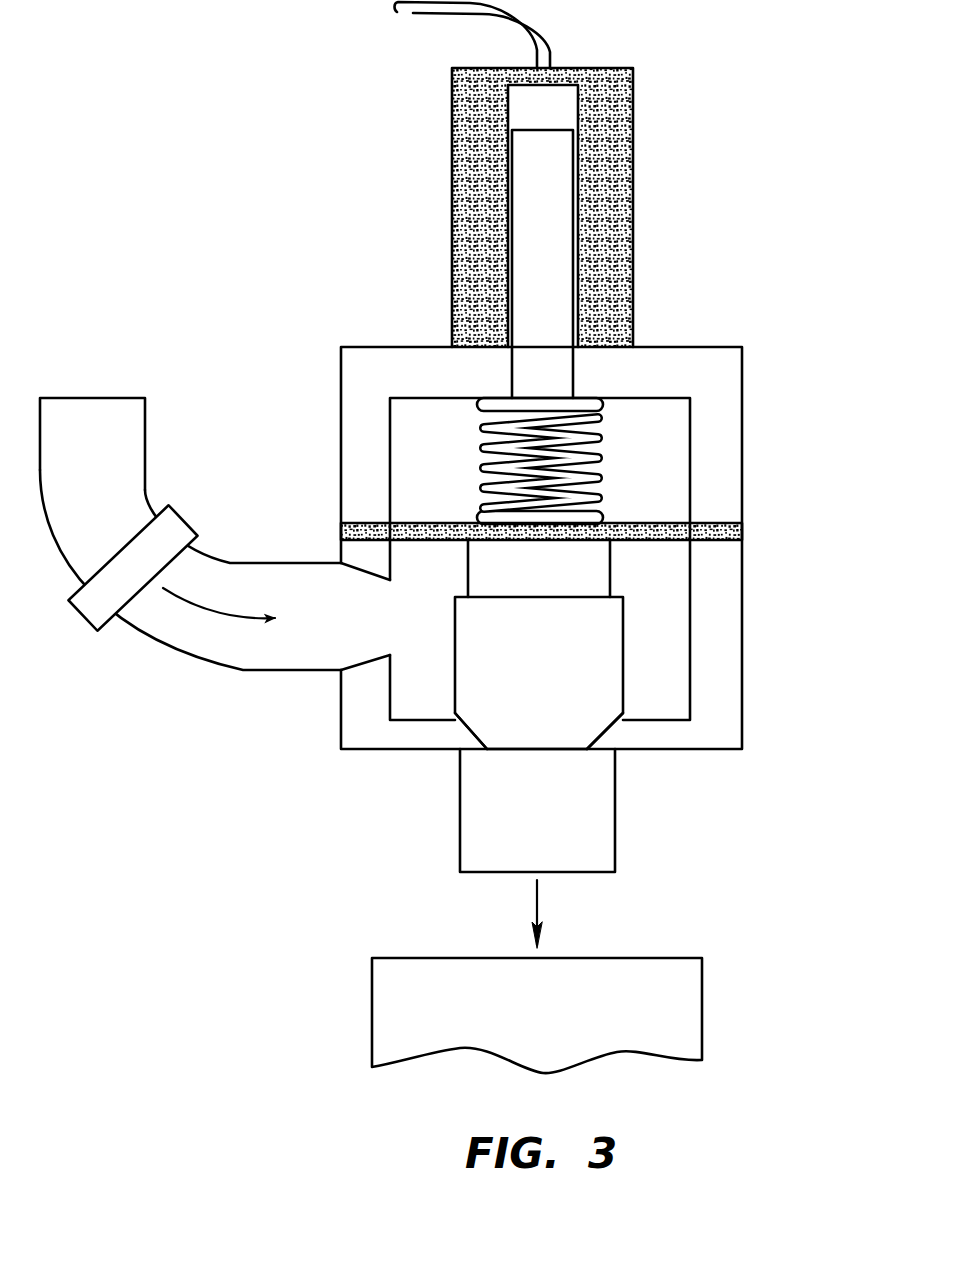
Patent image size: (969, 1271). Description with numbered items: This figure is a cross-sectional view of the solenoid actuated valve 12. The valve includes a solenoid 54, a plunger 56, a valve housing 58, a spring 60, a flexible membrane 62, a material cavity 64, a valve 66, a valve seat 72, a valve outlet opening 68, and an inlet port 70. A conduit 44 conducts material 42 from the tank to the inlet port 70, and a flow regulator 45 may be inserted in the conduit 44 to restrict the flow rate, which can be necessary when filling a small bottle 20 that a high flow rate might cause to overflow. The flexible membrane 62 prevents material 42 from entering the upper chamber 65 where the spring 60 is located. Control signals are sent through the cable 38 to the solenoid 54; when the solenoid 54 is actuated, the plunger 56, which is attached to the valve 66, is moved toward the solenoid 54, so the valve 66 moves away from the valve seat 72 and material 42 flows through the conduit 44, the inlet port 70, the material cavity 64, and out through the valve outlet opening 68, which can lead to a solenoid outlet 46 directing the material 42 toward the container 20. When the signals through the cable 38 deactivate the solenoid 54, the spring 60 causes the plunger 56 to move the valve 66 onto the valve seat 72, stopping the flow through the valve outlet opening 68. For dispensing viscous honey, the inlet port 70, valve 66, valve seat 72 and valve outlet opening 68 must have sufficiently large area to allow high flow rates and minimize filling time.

The solenoid actuated valve 12 is at (848, 359).
The small bottle 20 is at (682, 1005).
The cable 38 is at (413, 13).
The material 42 is at (248, 650).
The conduit 44 is at (233, 575).
The flow regulator 45 is at (177, 527).
The solenoid outlet 46 is at (590, 835).
The solenoid 54 is at (617, 227).
The plunger 56 is at (562, 285).
The valve housing 58 is at (727, 375).
The spring 60 is at (600, 452).
The flexible membrane 62 is at (740, 536).
The material cavity 64 is at (663, 597).
The upper chamber 65 is at (670, 425).
The valve 66 is at (607, 680).
The valve outlet opening 68 is at (608, 738).
The inlet port 70 is at (388, 620).
The valve seat 72 is at (458, 720).